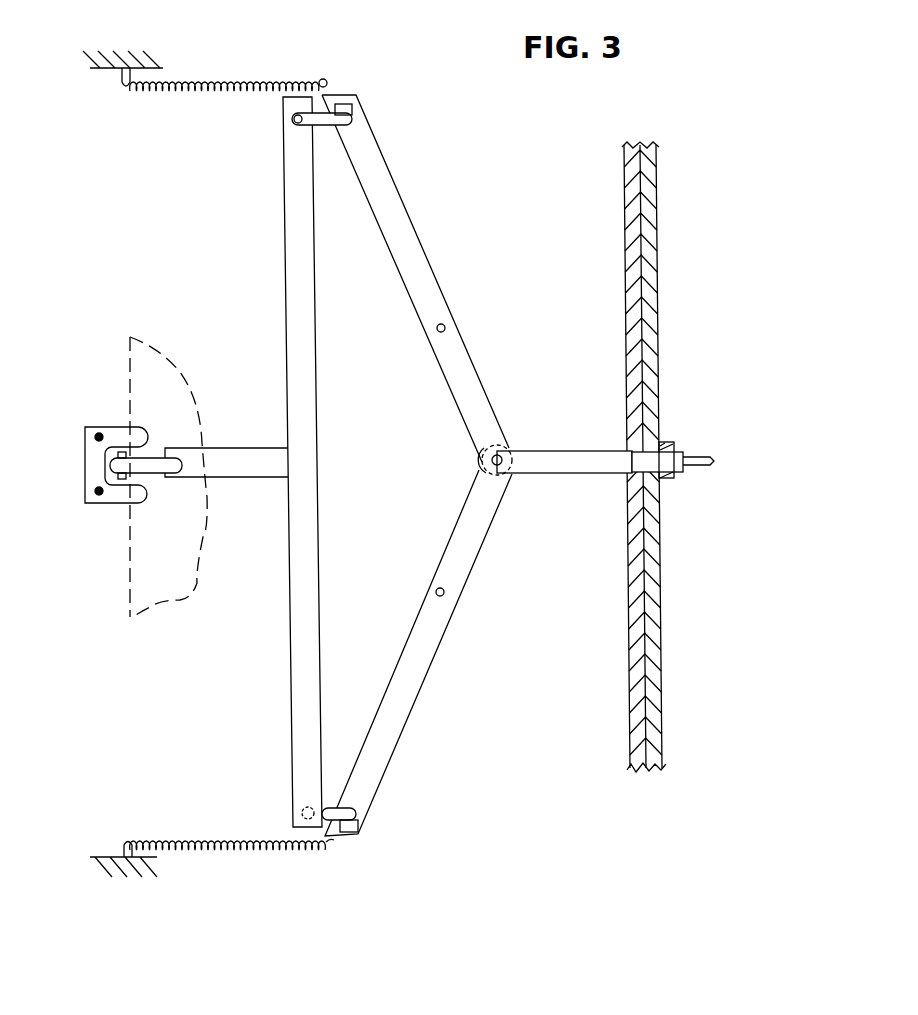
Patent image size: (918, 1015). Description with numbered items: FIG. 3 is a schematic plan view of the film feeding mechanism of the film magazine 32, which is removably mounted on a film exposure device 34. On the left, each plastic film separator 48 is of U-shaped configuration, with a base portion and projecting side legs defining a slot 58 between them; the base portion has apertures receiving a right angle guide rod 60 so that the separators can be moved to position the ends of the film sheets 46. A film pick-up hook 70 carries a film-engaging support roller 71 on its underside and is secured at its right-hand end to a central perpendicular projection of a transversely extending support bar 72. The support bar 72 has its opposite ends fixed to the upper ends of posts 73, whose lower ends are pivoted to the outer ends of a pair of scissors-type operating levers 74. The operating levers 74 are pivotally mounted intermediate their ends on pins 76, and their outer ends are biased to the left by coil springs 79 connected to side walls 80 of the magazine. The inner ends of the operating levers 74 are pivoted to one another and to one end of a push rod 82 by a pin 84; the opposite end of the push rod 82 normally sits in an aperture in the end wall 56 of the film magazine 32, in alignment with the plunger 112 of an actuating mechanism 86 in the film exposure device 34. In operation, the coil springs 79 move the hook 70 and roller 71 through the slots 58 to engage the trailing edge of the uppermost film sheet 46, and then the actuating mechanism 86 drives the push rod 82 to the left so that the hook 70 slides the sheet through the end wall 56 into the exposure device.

The film magazine 32 is at (502, 176).
The film exposure device 34 is at (702, 246).
The film sheets 46 is at (128, 558).
The plastic film separators 48 is at (123, 493).
The end wall 56 is at (632, 647).
The slot 58 is at (107, 463).
The right angle guide rods 60 is at (95, 437).
The film pick-up hook 70 is at (122, 452).
The film-engaging support roller 71 is at (117, 479).
The support bar 72 is at (257, 463).
The posts 73 is at (328, 128).
The scissors-type operating levers 74 is at (470, 507).
The pins 76 is at (445, 326).
The coil springs 79 is at (253, 82).
The side walls 80 is at (116, 66).
The push rod 82 is at (572, 458).
The pin 84 is at (497, 456).
The actuating mechanism 86 is at (719, 447).
The plunger 112 is at (680, 472).